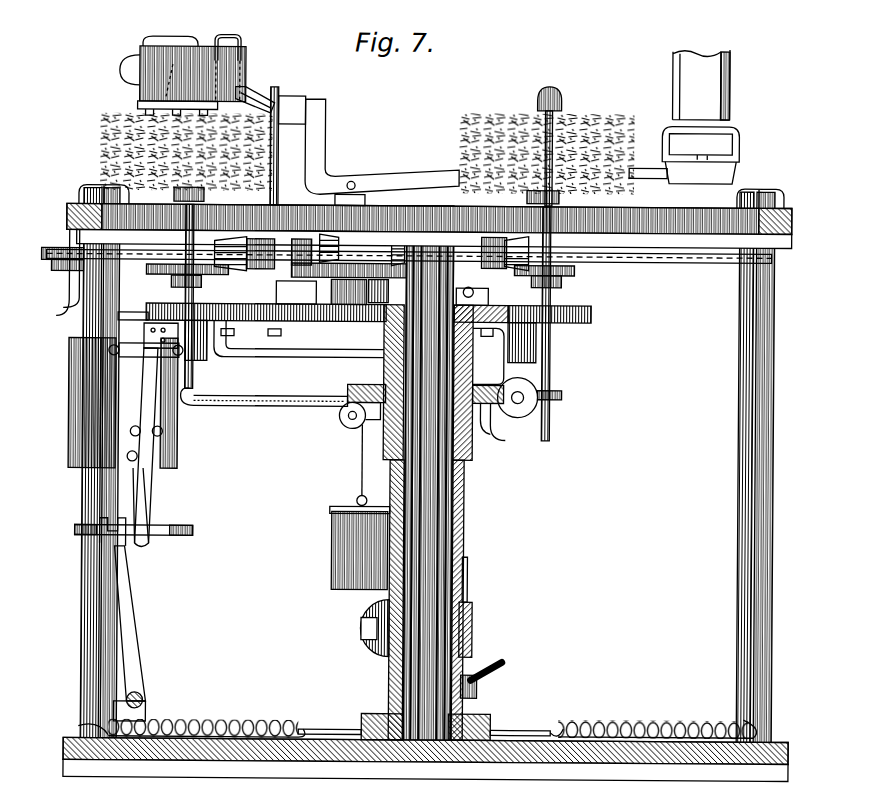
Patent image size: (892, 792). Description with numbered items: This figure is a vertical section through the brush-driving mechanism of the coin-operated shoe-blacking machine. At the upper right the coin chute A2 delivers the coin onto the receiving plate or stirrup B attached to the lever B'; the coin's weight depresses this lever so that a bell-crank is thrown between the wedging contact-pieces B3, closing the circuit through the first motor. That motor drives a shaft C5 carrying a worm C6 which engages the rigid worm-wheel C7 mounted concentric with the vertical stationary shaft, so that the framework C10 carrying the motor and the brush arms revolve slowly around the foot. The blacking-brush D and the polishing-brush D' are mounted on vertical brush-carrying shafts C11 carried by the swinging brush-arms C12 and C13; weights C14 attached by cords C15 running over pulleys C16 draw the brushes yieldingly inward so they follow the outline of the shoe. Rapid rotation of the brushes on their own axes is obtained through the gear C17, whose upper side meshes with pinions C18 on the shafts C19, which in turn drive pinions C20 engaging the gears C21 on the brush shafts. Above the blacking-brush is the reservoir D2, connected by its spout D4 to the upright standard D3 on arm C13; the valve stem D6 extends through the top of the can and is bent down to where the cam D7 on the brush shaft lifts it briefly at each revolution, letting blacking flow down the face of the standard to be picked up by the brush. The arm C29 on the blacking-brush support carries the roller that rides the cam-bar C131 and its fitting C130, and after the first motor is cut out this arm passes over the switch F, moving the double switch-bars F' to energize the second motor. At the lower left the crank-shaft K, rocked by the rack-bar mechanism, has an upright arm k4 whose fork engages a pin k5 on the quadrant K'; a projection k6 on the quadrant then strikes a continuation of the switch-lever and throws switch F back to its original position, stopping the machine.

The chute A2 is at (701, 85).
The receiving plate or stirrup B is at (700, 156).
The lever B' is at (648, 186).
The contact-pieces B3 is at (118, 72).
The blacking-brush D is at (171, 156).
The polishing-brush D' is at (547, 146).
The reservoir D2 is at (185, 40).
The upright standard D3 is at (305, 188).
The spout D4 is at (258, 98).
The valve stem D6 is at (238, 44).
The cam D7 is at (138, 108).
The shaft C5 is at (548, 392).
The worm C6 is at (463, 318).
The worm-wheel C7 is at (497, 406).
The framework C10 is at (474, 645).
The brush-carrying shafts C11 is at (182, 248).
The swinging brush-arm C12 is at (512, 313).
The swinging brush-arm C13 is at (467, 250).
The weights C14 is at (343, 540).
The cords C15 is at (285, 397).
The pulleys C16 is at (350, 426).
The gear C17 is at (362, 264).
The pinions C18 is at (398, 235).
The shafts C19 is at (280, 257).
The pinions C20 is at (220, 253).
The gears C21 is at (165, 278).
The arm C29 is at (60, 316).
The fitting C130 is at (60, 275).
The rod C131 is at (125, 262).
The switch F is at (92, 402).
The double switch-bars F' is at (173, 435).
The crank-shaft K is at (146, 690).
The quadrant K' is at (163, 505).
The upright arm k4 is at (128, 637).
The pin k5 is at (100, 540).
The projection k6 is at (193, 532).